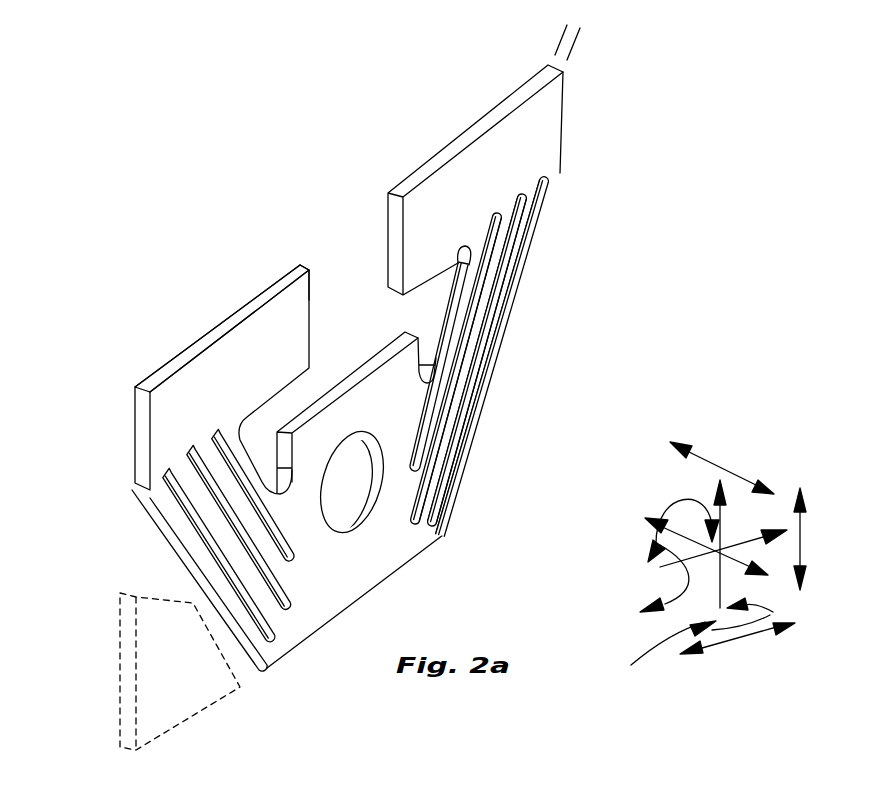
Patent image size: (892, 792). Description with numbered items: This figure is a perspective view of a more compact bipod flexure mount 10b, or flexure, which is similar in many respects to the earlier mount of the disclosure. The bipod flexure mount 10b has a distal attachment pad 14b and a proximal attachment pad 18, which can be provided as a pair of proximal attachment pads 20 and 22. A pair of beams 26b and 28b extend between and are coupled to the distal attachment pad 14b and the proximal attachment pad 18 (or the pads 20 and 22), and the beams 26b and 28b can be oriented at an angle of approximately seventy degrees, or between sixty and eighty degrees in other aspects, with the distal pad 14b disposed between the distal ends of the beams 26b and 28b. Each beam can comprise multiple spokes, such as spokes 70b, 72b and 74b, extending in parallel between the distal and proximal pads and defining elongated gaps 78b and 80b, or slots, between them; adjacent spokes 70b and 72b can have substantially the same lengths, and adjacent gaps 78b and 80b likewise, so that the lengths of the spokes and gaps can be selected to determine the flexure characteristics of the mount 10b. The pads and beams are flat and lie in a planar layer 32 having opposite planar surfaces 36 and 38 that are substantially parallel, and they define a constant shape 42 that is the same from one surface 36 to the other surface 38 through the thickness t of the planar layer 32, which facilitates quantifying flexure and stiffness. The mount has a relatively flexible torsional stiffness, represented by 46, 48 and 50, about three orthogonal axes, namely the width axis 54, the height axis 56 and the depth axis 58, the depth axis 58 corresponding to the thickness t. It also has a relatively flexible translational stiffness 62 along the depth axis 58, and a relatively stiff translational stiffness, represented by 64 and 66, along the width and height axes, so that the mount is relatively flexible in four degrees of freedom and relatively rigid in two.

The bipod flexure mount 10b is at (456, 553).
The distal attachment pad 14b is at (310, 617).
The proximal attachment pad 18 is at (158, 418).
The proximal attachment pad 20 is at (182, 388).
The proximal attachment pad 22 is at (440, 190).
The beam 26b is at (173, 553).
The beam 28b is at (527, 268).
The planar layer 32 is at (143, 687).
The planar surface 36 is at (280, 286).
The planar surface 38 is at (242, 292).
The constant shape 42 is at (553, 112).
The torsional stiffness 46 is at (673, 603).
The torsional stiffness 48 is at (700, 645).
The torsional stiffness 50 is at (684, 497).
The width axis 54 is at (703, 557).
The height axis 56 is at (721, 517).
The depth axis 58 is at (730, 560).
The translational stiffness 62 is at (740, 473).
The translational stiffness 64 is at (744, 640).
The translational stiffness 66 is at (806, 538).
The spoke 70b is at (450, 503).
The spoke 72b is at (452, 427).
The spoke 74b is at (463, 370).
The elongated gap 78b is at (450, 467).
The elongated gap 80b is at (457, 395).
The thickness t is at (613, 65).